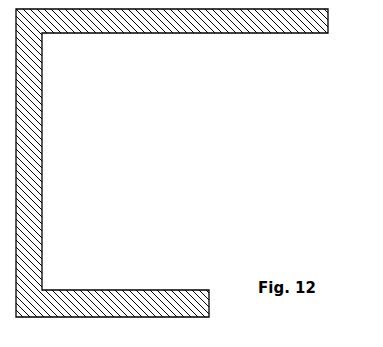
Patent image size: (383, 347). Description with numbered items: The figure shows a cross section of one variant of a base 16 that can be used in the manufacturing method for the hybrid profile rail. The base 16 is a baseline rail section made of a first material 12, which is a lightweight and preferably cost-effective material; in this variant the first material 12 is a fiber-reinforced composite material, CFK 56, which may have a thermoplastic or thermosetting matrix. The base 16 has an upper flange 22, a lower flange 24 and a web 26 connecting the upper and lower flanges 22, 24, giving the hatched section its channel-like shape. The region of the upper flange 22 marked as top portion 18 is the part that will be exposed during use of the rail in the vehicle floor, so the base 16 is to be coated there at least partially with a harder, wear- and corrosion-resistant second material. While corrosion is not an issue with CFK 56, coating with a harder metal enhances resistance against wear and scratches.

The base 16 is at (249, 168).
The upper flange 22 is at (130, 33).
The first material 12 is at (213, 36).
The top portion 18 is at (272, 36).
The CFK 56 is at (42, 113).
The web 26 is at (42, 160).
The lower flange 24 is at (113, 290).